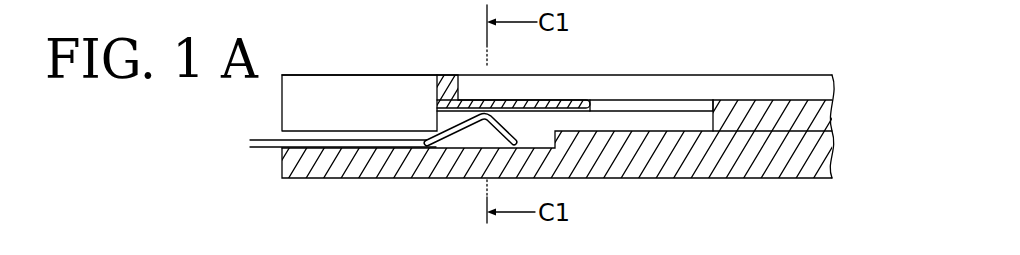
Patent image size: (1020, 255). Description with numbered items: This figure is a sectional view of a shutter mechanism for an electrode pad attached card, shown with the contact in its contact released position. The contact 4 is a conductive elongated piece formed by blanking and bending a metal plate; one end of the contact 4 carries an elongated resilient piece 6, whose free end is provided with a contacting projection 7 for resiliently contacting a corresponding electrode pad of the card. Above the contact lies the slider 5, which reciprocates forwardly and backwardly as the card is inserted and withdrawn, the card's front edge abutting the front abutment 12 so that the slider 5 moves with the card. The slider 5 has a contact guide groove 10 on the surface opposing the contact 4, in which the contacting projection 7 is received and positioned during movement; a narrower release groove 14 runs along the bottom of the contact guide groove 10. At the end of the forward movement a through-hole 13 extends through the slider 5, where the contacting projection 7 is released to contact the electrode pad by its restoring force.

The contact 4 is at (355, 137).
The front abutment 12 is at (445, 85).
The contacting projection 7 is at (487, 112).
The through-hole 13 is at (655, 104).
The slider 5 is at (762, 106).
The elongated resilient piece 6 is at (436, 141).
The release groove 14 is at (567, 113).
The contact guide groove 10 is at (670, 124).